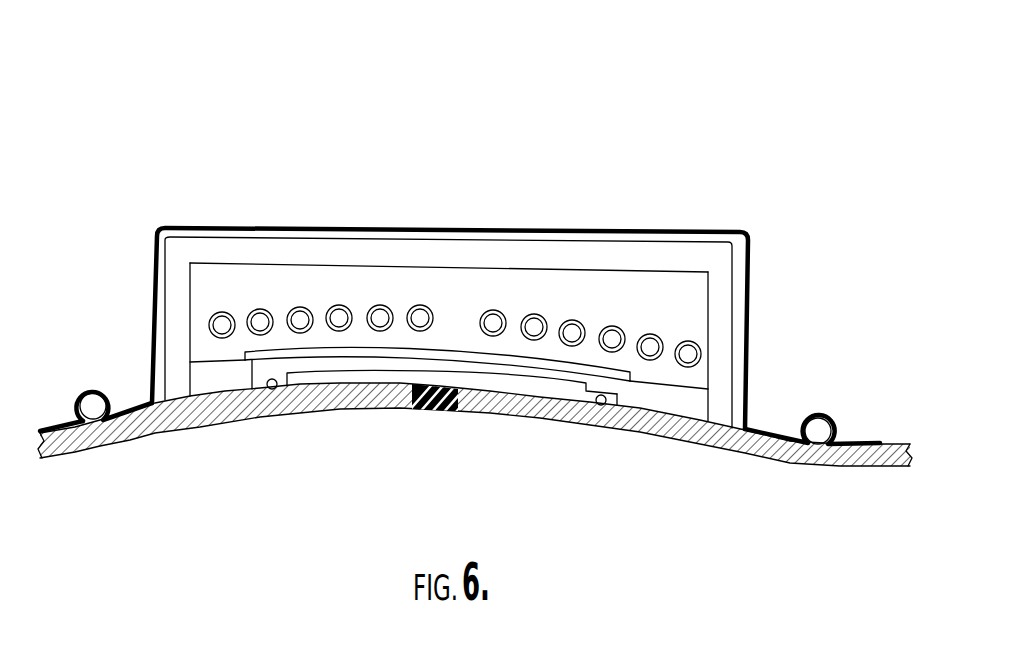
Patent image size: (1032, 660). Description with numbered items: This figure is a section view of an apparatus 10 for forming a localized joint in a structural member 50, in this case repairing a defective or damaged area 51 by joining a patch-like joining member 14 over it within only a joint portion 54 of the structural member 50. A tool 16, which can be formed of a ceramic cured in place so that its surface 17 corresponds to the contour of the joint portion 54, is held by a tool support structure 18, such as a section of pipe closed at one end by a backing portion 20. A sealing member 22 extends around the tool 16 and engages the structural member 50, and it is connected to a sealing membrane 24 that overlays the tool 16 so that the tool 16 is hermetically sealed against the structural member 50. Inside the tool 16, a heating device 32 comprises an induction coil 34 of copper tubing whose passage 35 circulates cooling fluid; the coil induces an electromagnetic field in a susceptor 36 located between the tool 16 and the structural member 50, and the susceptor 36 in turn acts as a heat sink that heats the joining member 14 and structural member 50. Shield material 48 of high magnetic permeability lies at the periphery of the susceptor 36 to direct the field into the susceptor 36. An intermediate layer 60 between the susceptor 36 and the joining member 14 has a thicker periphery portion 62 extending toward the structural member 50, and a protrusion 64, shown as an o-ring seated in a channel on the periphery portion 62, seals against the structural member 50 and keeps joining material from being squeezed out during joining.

The apparatus 10 is at (475, 286).
The joining member 14 is at (558, 392).
The tool 16 is at (260, 278).
The surface 17 is at (287, 347).
The tool support structure 18 is at (723, 298).
The backing portion 20 is at (697, 252).
The sealing member 22 is at (95, 400).
The sealing membrane 24 is at (148, 277).
The heating device 32 is at (435, 290).
The induction coil 34 is at (432, 310).
The passage 35 is at (379, 298).
The susceptor 36 is at (527, 363).
The shield material 48 is at (212, 363).
The structural member 50 is at (820, 452).
The defective or damaged area 51 is at (432, 408).
The joint portion 54 is at (349, 434).
The intermediate layer 60 is at (328, 385).
The periphery portion 62 is at (268, 388).
The protrusion 64 is at (263, 382).